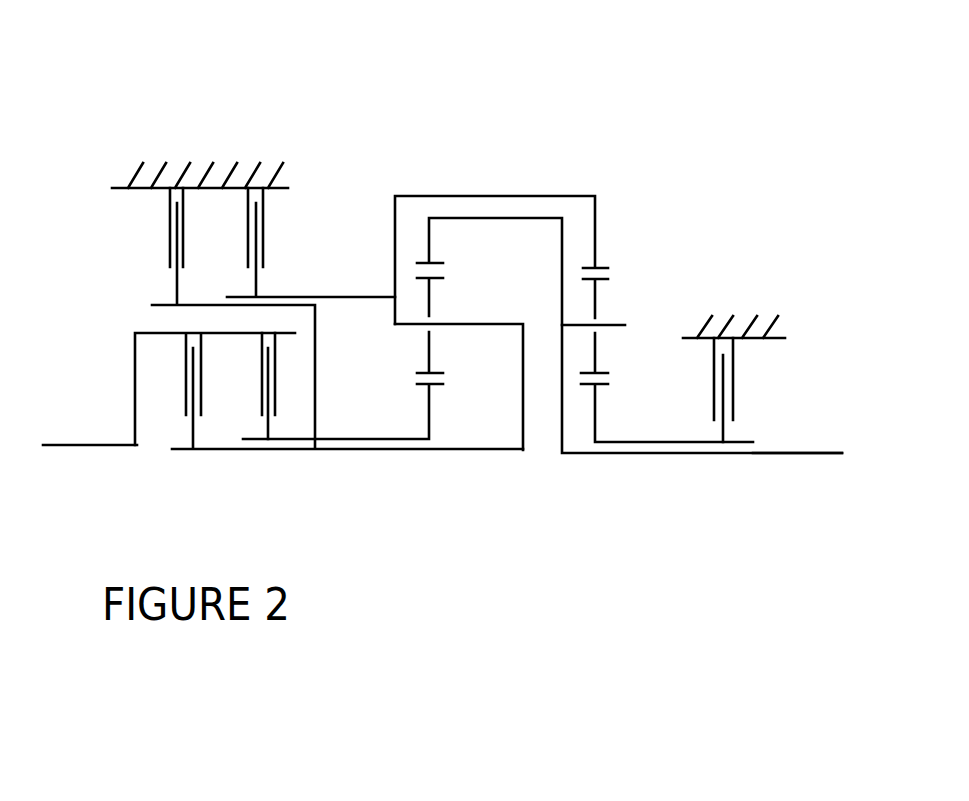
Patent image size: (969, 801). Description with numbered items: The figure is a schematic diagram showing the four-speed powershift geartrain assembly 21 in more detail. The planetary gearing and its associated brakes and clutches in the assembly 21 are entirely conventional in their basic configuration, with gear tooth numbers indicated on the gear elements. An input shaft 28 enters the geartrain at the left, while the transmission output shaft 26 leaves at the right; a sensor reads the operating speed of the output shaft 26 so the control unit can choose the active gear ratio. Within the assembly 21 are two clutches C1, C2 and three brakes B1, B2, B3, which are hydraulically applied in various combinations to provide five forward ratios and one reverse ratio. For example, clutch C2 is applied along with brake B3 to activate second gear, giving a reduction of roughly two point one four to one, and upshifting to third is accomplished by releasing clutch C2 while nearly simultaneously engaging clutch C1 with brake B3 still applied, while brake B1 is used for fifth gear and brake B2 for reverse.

The powershift geartrain assembly 21 is at (523, 93).
The transmission output shaft 26 is at (787, 453).
The input shaft 28 is at (85, 445).
The brake B1 is at (224, 318).
The brake B2 is at (301, 242).
The brake B3 is at (746, 390).
The clutch C1 is at (329, 391).
The clutch C2 is at (246, 386).